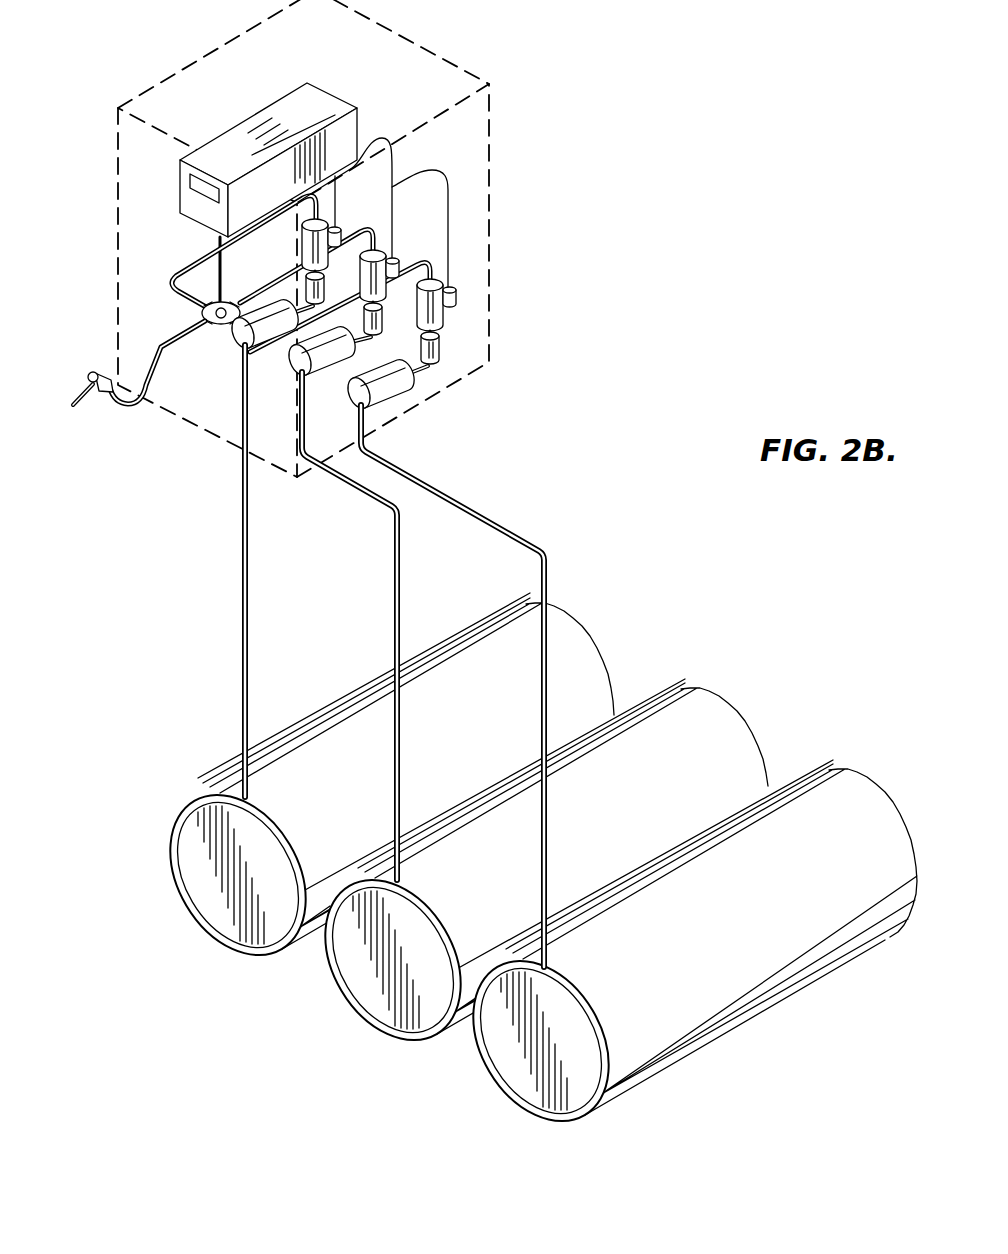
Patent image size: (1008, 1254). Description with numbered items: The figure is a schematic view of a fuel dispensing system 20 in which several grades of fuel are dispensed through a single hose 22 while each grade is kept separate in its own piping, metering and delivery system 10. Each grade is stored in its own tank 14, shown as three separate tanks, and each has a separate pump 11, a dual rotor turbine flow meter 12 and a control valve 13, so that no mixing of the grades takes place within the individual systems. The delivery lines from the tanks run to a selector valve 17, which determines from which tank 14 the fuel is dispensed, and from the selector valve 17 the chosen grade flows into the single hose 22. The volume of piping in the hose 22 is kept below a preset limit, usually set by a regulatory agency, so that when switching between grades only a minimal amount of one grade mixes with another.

The delivery system 10 is at (243, 512).
The pump 11 is at (398, 393).
The dual rotor turbine flow meter 12 is at (330, 218).
The control valve 13 is at (442, 355).
The tank 14 is at (203, 912).
The selector valve 17 is at (201, 314).
The system 20 is at (227, 132).
The hose 22 is at (99, 394).